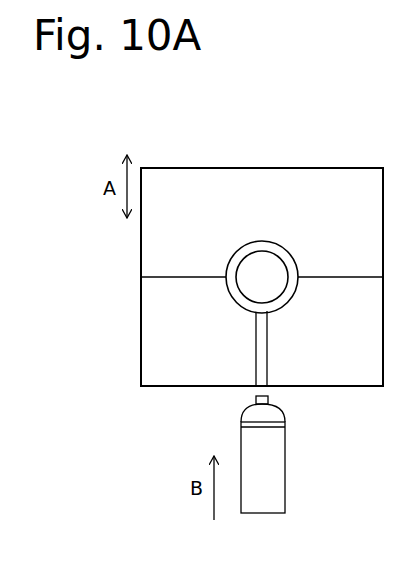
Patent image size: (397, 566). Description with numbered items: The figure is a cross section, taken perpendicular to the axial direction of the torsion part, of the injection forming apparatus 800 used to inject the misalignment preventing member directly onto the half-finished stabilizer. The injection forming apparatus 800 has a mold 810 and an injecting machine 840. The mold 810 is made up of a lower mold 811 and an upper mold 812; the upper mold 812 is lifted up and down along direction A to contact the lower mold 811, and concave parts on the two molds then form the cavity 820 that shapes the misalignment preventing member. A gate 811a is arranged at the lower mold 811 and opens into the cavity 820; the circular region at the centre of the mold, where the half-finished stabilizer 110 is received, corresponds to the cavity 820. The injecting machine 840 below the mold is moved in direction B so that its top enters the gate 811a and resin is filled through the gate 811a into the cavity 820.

The injection forming apparatus 800 is at (180, 160).
The mold 810 is at (72, 222).
The lower mold 811 is at (163, 301).
The upper mold 812 is at (163, 240).
The gate 811a is at (270, 340).
The cavity 820 is at (292, 257).
The electronic component 110 is at (264, 252).
The injecting machine 840 is at (285, 467).